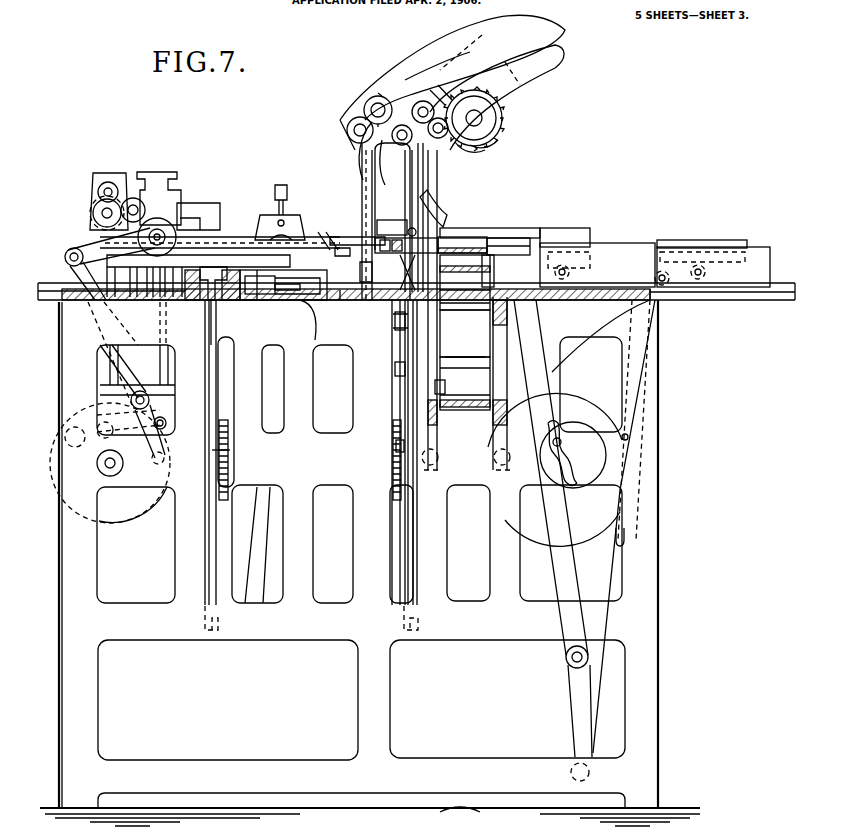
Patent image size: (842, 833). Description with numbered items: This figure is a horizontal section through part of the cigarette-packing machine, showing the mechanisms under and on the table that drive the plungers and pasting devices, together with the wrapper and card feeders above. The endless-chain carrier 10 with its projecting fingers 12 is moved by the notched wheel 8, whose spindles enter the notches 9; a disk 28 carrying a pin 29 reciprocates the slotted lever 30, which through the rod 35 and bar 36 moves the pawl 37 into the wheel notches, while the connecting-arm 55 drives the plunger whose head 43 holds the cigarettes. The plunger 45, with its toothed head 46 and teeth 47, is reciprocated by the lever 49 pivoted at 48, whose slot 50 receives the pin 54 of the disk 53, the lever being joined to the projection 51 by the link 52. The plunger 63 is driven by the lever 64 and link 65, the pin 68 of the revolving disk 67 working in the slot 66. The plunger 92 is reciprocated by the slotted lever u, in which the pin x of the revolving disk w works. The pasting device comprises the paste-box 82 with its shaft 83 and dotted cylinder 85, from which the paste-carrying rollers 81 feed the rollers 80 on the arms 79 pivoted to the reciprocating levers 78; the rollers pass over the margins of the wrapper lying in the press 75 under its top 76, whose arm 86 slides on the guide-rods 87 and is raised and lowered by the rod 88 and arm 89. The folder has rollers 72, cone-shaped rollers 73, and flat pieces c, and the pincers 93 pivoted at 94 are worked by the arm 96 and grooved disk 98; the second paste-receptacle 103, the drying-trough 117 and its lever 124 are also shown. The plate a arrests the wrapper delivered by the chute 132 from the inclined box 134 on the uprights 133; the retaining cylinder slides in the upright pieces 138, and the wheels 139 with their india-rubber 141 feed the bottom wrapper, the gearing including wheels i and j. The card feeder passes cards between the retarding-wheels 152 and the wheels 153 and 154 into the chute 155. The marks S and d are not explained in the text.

The inclined box or trough 134 is at (500, 28).
The wheel j is at (405, 85).
The wheel i is at (360, 105).
The upright pieces 138 is at (376, 95).
The wheel 153 is at (425, 100).
The retarding-wheels 152 is at (455, 95).
The revolving wheels 139 is at (483, 115).
The india-rubber 141 is at (498, 135).
The spring S is at (485, 150).
The wheel 154 is at (445, 138).
The uprights 133 is at (362, 150).
The chute 132 is at (363, 170).
The chute 155 is at (408, 185).
The paste-box 82 is at (98, 178).
The paste-carrying rollers 81 is at (133, 198).
The guide-rods 87 is at (177, 180).
The arm 86 is at (205, 210).
The rollers 80 is at (165, 222).
The shaft 83 is at (98, 192).
The cylinder 85 is at (93, 213).
The paste-receptacle 103 is at (265, 210).
The cone-shaped rollers 73 is at (318, 232).
The rollers 72 is at (350, 237).
The flat pieces c is at (340, 248).
The vertically-moving top 76 is at (230, 237).
The press 75 is at (198, 270).
The arms 79 is at (70, 248).
The teeth 47 is at (490, 228).
The plunger 45 is at (545, 229).
The head 46 is at (455, 237).
The projecting fingers 12 is at (462, 455).
The plunger 63 is at (728, 240).
The head 43 is at (406, 255).
The link 52 is at (494, 268).
The projection 51 is at (570, 268).
The pivot 94 is at (360, 272).
The endless-chain carrier 10 is at (465, 282).
The link 65 is at (668, 283).
The drying-trough 117 is at (82, 305).
The rod 88 is at (168, 330).
The plunger 92 is at (228, 300).
The pincers 93 is at (260, 300).
The arm 96 is at (290, 294).
The revolving disk 98 is at (304, 326).
The plate a is at (340, 300).
The connecting-arm 55 is at (393, 320).
The notches 9 is at (462, 308).
The wheel 8 is at (465, 345).
The levers 78 is at (120, 365).
The rod or bar 35 is at (395, 366).
The revolving disk 67 is at (575, 392).
The bar 36 is at (435, 386).
The pawl or dog 37 is at (452, 383).
The disk 28 is at (396, 446).
The pin 54 is at (570, 425).
The pin 68 is at (628, 437).
The revolving disk w is at (228, 422).
The pin x is at (230, 450).
The pin 29 is at (395, 440).
The slot 50 is at (553, 448).
The disk 53 is at (562, 484).
The arm 89 is at (128, 455).
The circle d is at (115, 518).
The lever u is at (216, 540).
The lever 30 is at (410, 535).
The slot 66 is at (624, 535).
The lever 49 is at (560, 553).
The lever 124 is at (258, 605).
The pivot 48 is at (566, 660).
The lever 64 is at (600, 657).